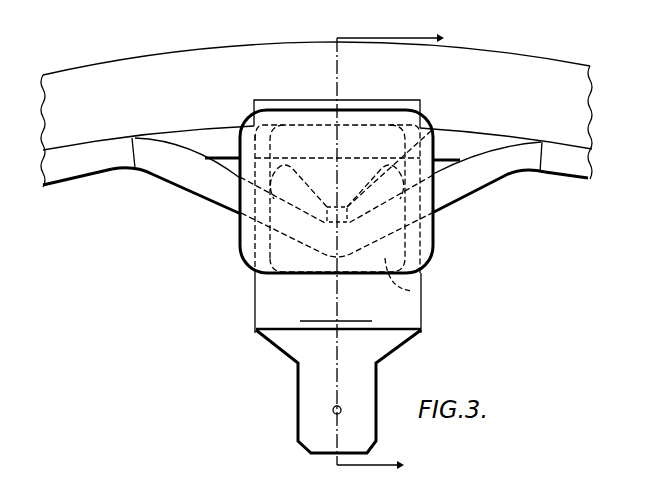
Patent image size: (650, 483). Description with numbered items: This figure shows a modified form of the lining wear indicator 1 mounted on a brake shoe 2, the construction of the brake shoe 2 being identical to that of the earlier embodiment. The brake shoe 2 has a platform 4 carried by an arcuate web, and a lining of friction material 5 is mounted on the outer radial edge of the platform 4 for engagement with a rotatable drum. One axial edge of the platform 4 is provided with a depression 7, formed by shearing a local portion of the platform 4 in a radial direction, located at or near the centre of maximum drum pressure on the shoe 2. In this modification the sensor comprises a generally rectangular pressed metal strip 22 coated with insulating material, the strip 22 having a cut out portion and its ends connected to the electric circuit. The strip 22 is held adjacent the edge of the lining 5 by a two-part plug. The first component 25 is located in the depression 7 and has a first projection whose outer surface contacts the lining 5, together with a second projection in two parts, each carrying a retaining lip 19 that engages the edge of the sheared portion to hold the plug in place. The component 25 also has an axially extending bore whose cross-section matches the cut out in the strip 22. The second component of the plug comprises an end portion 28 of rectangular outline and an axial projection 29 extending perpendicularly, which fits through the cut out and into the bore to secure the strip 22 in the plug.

The lining wear indicator 1 is at (435, 248).
The brake shoe 2 is at (85, 180).
The platform 4 is at (108, 167).
The lining of friction material 5 is at (213, 58).
The depression 7 is at (233, 170).
The retaining lip 19 is at (432, 229).
The pressed metal strip 22 is at (413, 309).
The component 25 is at (413, 291).
The end portion 28 is at (244, 241).
The axial projection 29 is at (431, 128).